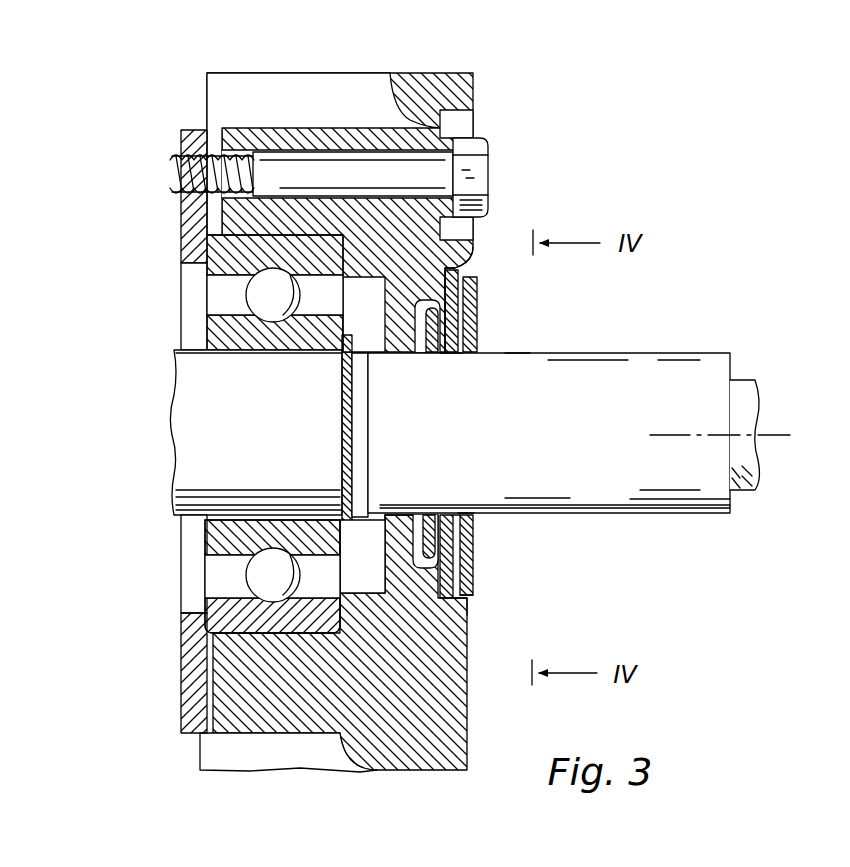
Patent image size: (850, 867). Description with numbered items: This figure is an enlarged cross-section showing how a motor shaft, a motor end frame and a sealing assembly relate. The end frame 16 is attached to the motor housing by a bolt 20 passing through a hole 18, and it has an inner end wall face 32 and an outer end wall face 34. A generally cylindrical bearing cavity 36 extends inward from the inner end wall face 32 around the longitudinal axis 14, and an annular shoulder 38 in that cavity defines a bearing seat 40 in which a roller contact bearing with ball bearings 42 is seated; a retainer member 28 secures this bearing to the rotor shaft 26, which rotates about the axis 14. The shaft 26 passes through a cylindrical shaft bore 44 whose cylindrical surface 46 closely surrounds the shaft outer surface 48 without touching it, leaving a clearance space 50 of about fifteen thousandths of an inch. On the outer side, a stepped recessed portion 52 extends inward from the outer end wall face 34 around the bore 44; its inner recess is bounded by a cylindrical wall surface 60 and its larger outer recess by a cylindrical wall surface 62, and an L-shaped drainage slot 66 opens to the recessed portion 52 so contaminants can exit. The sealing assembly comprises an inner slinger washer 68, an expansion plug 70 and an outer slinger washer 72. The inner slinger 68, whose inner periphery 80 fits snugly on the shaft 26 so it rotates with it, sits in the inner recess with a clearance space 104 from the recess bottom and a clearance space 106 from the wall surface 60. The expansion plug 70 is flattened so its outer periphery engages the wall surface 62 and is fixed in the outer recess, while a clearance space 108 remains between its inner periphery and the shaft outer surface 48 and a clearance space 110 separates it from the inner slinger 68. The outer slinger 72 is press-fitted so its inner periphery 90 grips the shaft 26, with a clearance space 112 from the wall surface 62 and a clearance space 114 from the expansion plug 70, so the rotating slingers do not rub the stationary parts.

The longitudinal axis 14 is at (775, 433).
The end frame 16 is at (456, 85).
The hole 18 is at (243, 162).
The bolt 20 is at (476, 172).
The rotor shaft 26 is at (718, 352).
The retainer member 28 is at (340, 357).
The inner end wall face 32 is at (207, 690).
The outer end wall face 34 is at (467, 716).
The bearing cavity 36 is at (198, 282).
The annular shoulder 38 is at (336, 262).
The bearing seat 40 is at (350, 588).
The ball bearings 42 is at (256, 297).
The shaft bore 44 is at (378, 343).
The cylindrical surface 46 is at (370, 355).
The shaft outer surface 48 is at (660, 352).
The clearance space 50 is at (396, 506).
The recessed portion 52 is at (482, 556).
The cylindrical wall surface 60 is at (418, 570).
The cylindrical wall surface 62 is at (470, 243).
The drainage slot 66 is at (467, 613).
The inner slinger washer 68 is at (428, 356).
The expansion plug 70 is at (450, 354).
The outer slinger washer 72 is at (478, 300).
The inner periphery 80 is at (440, 506).
The inner periphery 90 is at (517, 352).
The clearance space 104 is at (415, 506).
The clearance space 106 is at (403, 566).
The clearance space 108 is at (460, 506).
The clearance space 110 is at (455, 506).
The clearance space 112 is at (476, 597).
The clearance space 114 is at (467, 506).